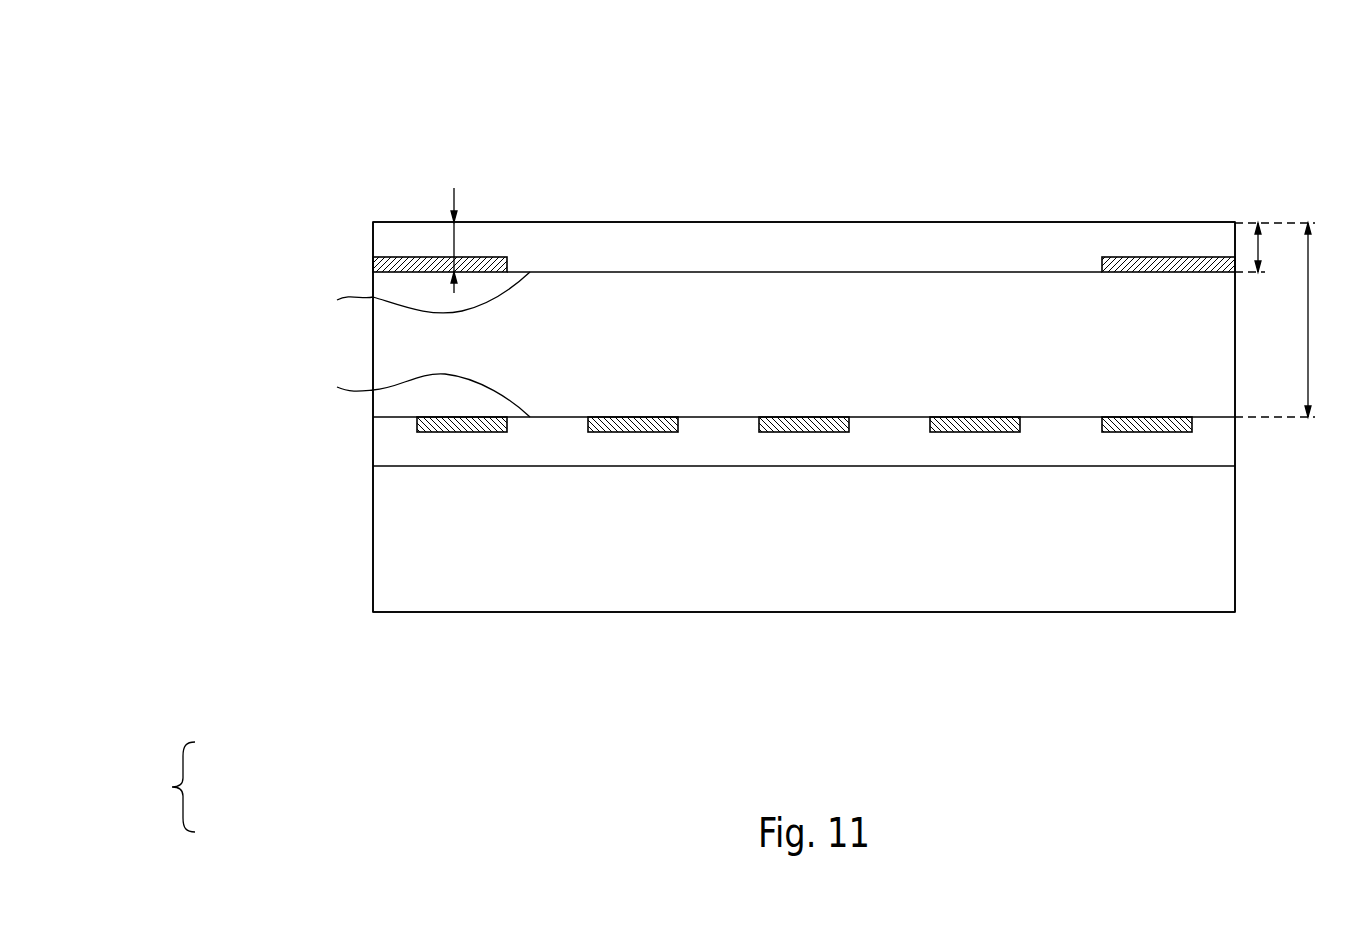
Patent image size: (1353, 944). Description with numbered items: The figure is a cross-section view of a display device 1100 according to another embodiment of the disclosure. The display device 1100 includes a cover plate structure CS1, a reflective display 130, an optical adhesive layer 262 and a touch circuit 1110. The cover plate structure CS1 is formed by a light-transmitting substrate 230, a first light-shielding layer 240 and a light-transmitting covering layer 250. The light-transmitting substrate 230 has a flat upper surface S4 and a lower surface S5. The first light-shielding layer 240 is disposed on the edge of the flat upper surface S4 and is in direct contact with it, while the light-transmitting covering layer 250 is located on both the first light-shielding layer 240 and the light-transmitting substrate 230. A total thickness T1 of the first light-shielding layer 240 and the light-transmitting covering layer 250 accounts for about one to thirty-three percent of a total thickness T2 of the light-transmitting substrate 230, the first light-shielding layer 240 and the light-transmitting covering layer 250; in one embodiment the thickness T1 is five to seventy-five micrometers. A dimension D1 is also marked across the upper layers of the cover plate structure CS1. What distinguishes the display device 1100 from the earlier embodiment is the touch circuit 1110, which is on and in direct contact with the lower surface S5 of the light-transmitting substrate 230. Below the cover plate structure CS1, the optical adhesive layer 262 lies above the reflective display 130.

The display device 1100 is at (312, 72).
The light-transmitting covering layer 250 is at (373, 240).
The first light-shielding layer 240 is at (373, 263).
The flat upper surface S4 is at (415, 293).
The light-transmitting substrate 230 is at (373, 340).
The lower surface S5 is at (415, 395).
The optical adhesive layer 262 is at (373, 440).
The reflective display 130 is at (373, 535).
The touch circuit 1110 is at (1160, 432).
The depth D1 is at (454, 227).
The total thickness of the first light-shielding layer and the light-transmitting co T1 is at (1275, 247).
The total thickness of the light-transmitting substrate, the first light-shielding l T2 is at (1290, 320).
The cover plate structure CS1 is at (178, 787).